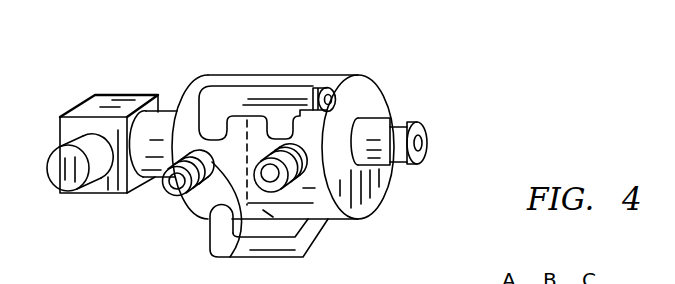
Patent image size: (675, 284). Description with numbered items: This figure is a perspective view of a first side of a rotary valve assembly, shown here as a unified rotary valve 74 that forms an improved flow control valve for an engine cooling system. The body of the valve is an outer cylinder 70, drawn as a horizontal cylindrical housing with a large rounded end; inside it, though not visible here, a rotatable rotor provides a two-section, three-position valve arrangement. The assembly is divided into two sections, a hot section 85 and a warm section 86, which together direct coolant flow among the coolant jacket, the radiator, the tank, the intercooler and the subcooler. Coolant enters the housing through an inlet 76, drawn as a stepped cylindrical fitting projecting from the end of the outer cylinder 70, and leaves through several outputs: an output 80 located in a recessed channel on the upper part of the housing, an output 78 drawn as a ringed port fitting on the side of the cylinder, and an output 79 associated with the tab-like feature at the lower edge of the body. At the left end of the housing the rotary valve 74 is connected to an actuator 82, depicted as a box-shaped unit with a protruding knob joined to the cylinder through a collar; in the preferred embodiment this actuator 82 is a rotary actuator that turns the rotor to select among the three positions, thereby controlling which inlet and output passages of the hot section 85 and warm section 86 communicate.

The outer cylinder 70 is at (239, 75).
The rotary valve 74 is at (122, 41).
The inlet 76 is at (372, 130).
The output 78 is at (283, 180).
The output 79 is at (230, 257).
The output 80 is at (285, 100).
The actuator 82 is at (91, 102).
The hot section 85 is at (362, 187).
The warm section 86 is at (193, 203).